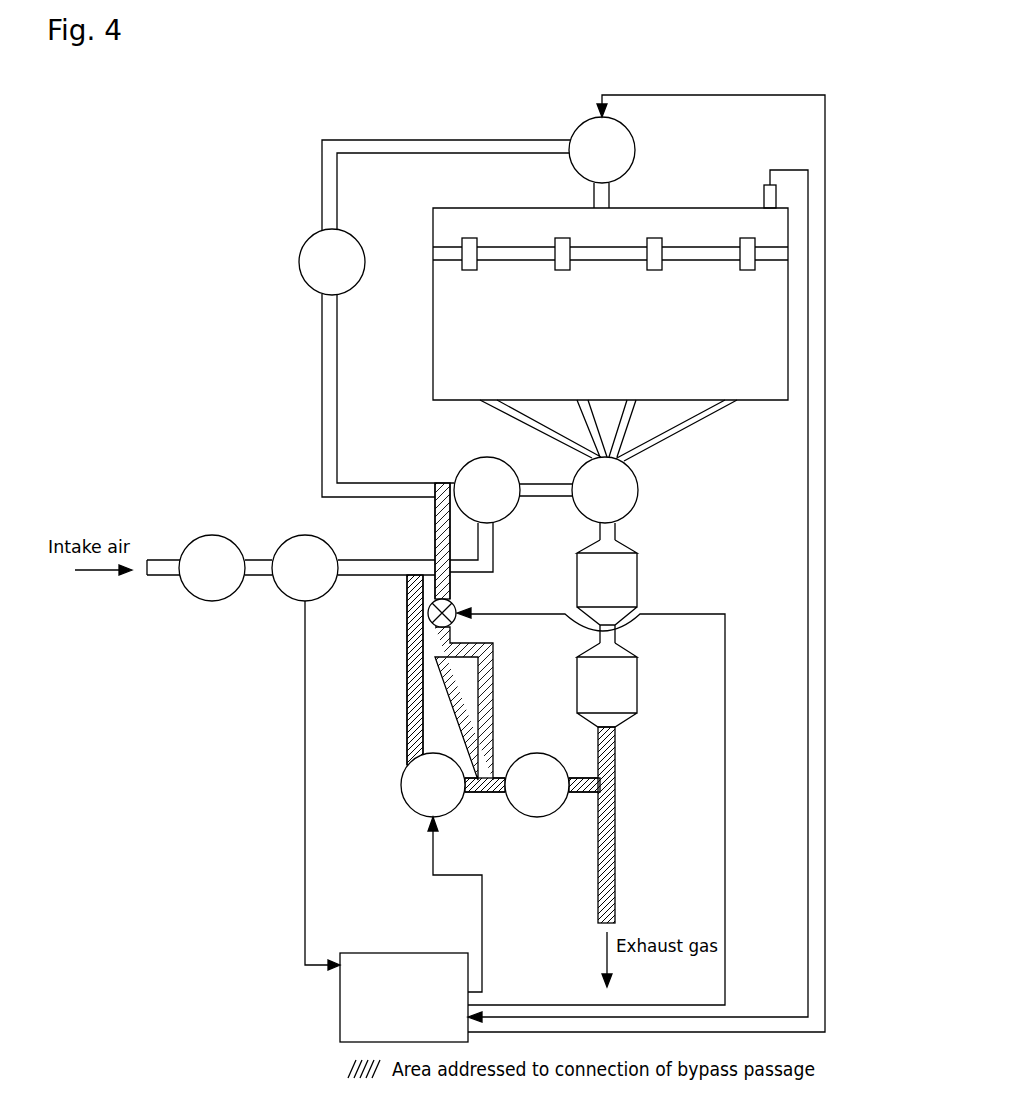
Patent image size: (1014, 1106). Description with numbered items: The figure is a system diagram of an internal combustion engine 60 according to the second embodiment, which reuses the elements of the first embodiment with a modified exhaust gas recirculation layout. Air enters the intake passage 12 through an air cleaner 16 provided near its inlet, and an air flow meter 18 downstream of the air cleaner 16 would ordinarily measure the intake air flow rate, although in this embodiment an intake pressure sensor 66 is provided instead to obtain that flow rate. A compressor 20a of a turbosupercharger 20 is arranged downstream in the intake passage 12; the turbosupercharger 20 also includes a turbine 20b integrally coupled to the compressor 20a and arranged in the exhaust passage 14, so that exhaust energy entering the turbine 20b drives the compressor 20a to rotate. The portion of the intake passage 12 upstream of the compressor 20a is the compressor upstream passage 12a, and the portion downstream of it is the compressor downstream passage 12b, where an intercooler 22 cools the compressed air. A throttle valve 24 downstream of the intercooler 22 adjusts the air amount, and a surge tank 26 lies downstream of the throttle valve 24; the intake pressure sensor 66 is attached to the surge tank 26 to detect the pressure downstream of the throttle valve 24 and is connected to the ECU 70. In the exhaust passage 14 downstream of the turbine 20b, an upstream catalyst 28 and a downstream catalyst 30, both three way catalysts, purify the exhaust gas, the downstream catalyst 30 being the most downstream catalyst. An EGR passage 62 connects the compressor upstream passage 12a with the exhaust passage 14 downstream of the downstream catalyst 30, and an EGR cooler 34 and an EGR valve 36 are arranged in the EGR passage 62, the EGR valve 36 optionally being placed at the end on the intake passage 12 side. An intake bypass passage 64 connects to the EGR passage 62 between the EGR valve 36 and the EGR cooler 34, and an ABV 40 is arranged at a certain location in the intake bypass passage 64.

The intake passage 12 is at (359, 357).
The compressor upstream passage 12a is at (160, 560).
The compressor downstream passage 12b is at (330, 368).
The exhaust passage 14 is at (620, 842).
The air cleaner 16 is at (213, 601).
The air flow meter 18 is at (302, 535).
The turbosupercharger 20 is at (548, 522).
The compressor 20a is at (465, 465).
The turbine 20b is at (638, 490).
The intercooler 22 is at (299, 262).
The throttle valve 24 is at (632, 140).
The surge tank 26 is at (437, 208).
The upstream catalyst 28 is at (623, 580).
The downstream catalyst 30 is at (623, 687).
The EGR cooler 34 is at (540, 818).
The EGR valve 36 is at (418, 812).
The ABV 40 is at (456, 605).
The internal combustion engine 60 is at (668, 180).
The EGR passage 62 is at (472, 794).
The intake bypass passage 64 is at (493, 700).
The intake pressure sensor 66 is at (766, 190).
The ECU 70 is at (440, 953).